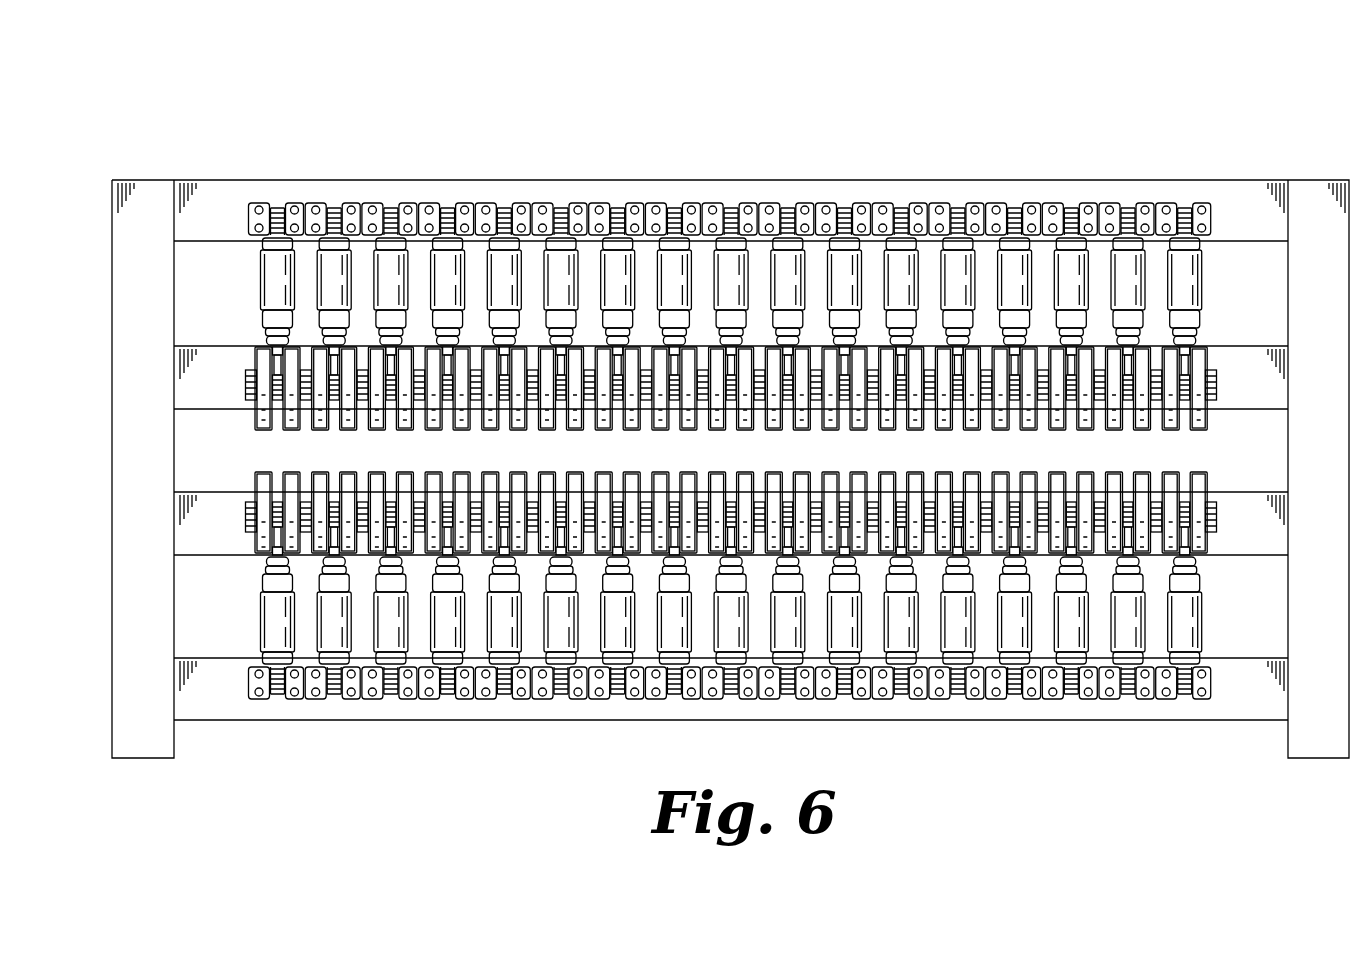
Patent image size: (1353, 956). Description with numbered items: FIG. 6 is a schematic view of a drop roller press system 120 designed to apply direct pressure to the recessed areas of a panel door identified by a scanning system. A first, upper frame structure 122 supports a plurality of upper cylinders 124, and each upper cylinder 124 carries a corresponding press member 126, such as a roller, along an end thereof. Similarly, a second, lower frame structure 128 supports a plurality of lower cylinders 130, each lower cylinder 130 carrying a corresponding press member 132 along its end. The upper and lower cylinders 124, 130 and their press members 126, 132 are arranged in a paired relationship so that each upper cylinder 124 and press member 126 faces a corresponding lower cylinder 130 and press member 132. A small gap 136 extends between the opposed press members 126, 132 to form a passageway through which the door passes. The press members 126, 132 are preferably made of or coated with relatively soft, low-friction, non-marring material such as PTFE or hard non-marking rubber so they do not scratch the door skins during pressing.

The drop roller press system 120 is at (923, 97).
The first (upper) frame structure 122 is at (210, 314).
The upper cylinder 124 is at (272, 282).
The press member 126 is at (263, 356).
The second (lower) frame structure 128 is at (210, 581).
The lower cylinder 130 is at (272, 606).
The press member 132 is at (262, 484).
The gap 136 is at (1203, 450).